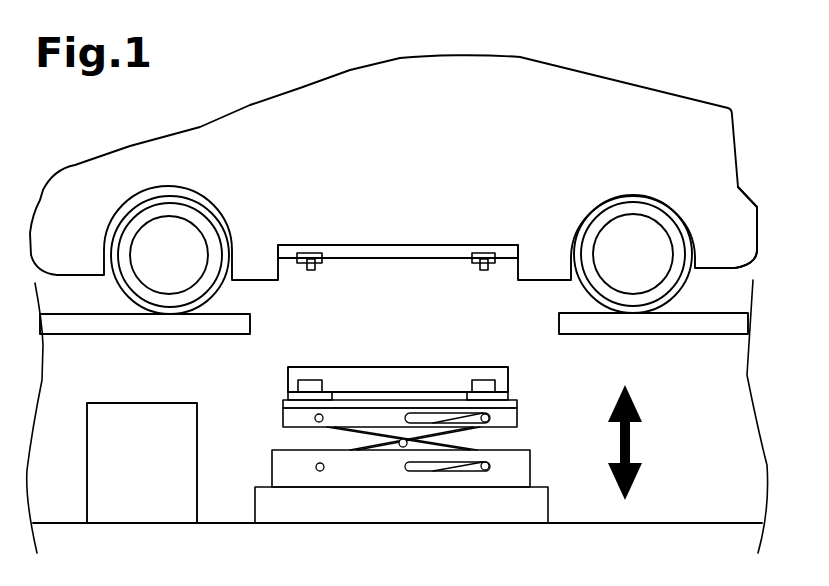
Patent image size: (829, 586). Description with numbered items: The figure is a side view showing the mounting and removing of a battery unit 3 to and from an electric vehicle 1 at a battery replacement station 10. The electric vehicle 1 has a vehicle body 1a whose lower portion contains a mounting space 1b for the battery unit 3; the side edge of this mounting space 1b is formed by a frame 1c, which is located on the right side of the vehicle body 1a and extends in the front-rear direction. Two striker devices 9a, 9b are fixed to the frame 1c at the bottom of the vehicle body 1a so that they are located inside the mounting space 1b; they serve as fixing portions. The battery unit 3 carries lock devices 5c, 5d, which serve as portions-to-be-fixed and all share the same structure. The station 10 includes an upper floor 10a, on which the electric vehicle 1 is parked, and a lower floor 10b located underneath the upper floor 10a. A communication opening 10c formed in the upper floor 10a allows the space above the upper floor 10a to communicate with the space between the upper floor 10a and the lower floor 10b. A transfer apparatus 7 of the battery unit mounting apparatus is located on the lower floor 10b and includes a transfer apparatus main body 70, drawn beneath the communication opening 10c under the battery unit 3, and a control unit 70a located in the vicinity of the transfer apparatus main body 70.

The electric vehicle 1 is at (624, 72).
The vehicle body 1a is at (735, 210).
The mounting space 1b is at (430, 262).
The frame 1c is at (397, 250).
The striker device 9a is at (313, 268).
The striker device 9b is at (490, 267).
The battery unit 3 is at (383, 375).
The lock device 5c is at (307, 380).
The lock device 5d is at (480, 380).
The transfer apparatus 7 is at (425, 364).
The transfer apparatus main body 70 is at (268, 440).
The control unit 70a is at (138, 410).
The battery replacement station 10 is at (401, 417).
The upper floor 10a is at (677, 320).
The lower floor 10b is at (725, 551).
The communication opening 10c is at (252, 318).